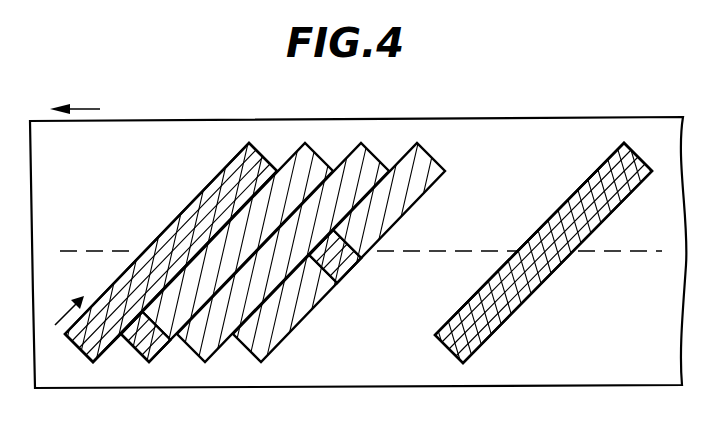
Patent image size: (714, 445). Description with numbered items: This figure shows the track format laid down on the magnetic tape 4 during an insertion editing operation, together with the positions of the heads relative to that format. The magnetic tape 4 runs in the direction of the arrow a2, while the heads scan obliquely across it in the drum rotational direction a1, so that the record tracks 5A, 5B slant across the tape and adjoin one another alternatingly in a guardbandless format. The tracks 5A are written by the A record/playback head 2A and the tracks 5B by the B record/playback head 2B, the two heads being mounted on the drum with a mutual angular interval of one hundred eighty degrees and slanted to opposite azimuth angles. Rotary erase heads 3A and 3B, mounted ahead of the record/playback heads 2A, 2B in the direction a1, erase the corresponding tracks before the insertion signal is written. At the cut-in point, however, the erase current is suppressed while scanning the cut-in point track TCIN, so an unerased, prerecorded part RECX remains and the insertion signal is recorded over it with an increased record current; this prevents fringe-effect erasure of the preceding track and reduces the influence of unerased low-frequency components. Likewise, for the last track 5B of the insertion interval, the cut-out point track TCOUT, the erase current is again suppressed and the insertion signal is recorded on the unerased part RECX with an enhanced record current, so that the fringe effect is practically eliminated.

The magnetic tape 4 is at (143, 130).
The record track 5A is at (263, 150).
The record track 5B is at (318, 152).
The record/playback head 2B is at (162, 347).
The record/playback head 2A is at (184, 369).
The rotary erase head 3B is at (345, 262).
The rotary erase head 3A is at (373, 263).
The unerased prerecorded part RECX is at (187, 208).
The cut-in point track TCIN is at (93, 363).
The cut-out point track TCOUT is at (580, 178).
The rotational direction a1 is at (70, 312).
The tape running direction a2 is at (76, 108).